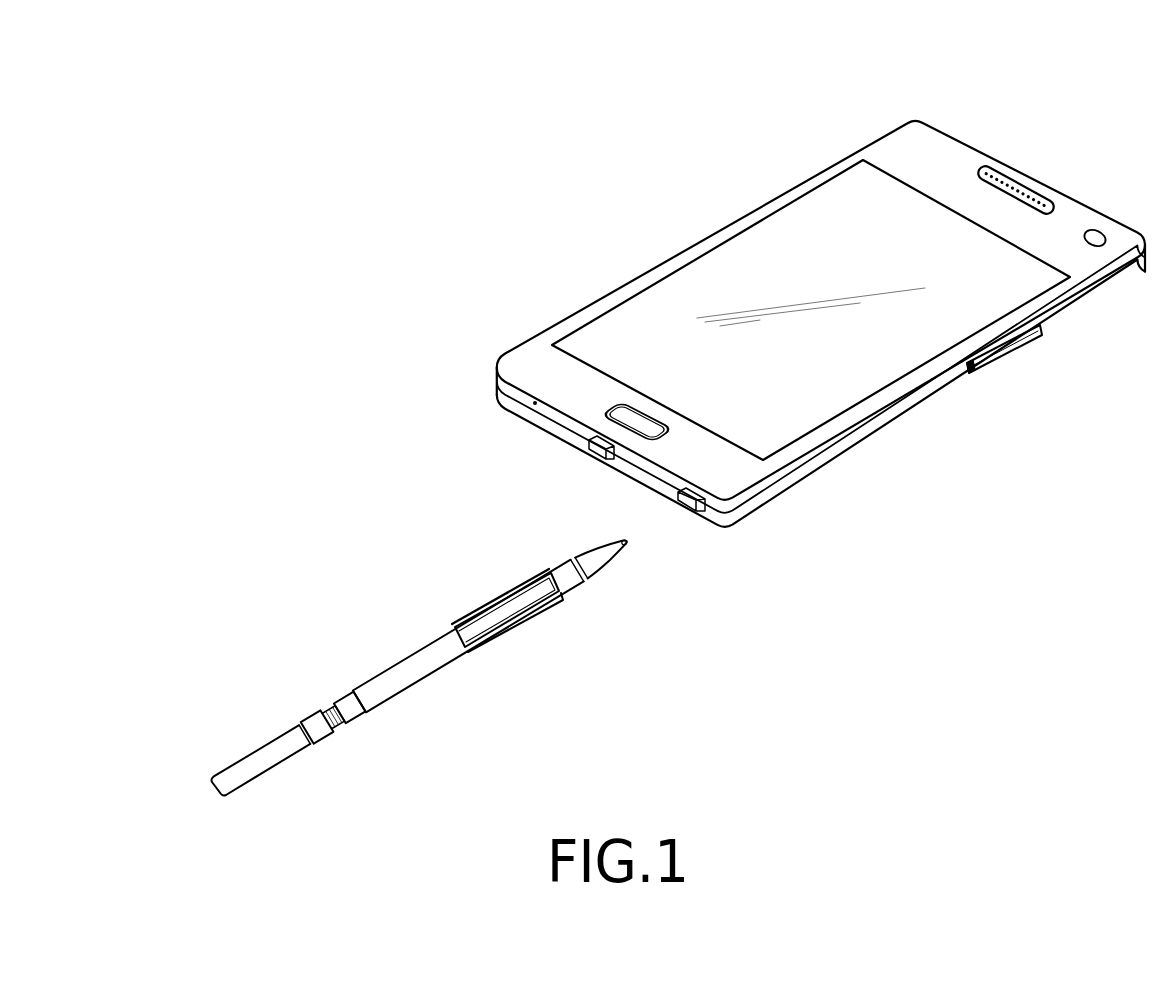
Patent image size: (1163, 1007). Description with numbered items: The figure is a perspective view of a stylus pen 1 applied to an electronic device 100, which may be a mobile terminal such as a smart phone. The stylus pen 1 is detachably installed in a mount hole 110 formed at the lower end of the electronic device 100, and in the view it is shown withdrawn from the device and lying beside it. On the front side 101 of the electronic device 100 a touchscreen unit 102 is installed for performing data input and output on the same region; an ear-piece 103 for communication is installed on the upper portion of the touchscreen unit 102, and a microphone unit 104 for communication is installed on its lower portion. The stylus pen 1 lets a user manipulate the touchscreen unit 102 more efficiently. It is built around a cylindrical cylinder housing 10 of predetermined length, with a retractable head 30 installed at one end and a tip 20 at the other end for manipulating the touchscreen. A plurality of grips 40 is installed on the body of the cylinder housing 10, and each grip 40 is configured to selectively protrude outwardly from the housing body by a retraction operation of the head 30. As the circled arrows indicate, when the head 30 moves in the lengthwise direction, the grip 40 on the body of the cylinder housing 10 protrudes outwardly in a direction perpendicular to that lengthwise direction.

The electronic device 100 is at (796, 112).
The front side 101 is at (895, 142).
The touchscreen unit 102 is at (1030, 283).
The ear-piece 103 is at (1024, 188).
The microphone unit 104 is at (535, 403).
The mount hole 110 is at (686, 512).
The stylus pen 1 is at (394, 630).
The cylinder housing 10 is at (391, 702).
The tip 20 is at (581, 556).
The head 30 is at (275, 770).
The grip 40 is at (512, 605).